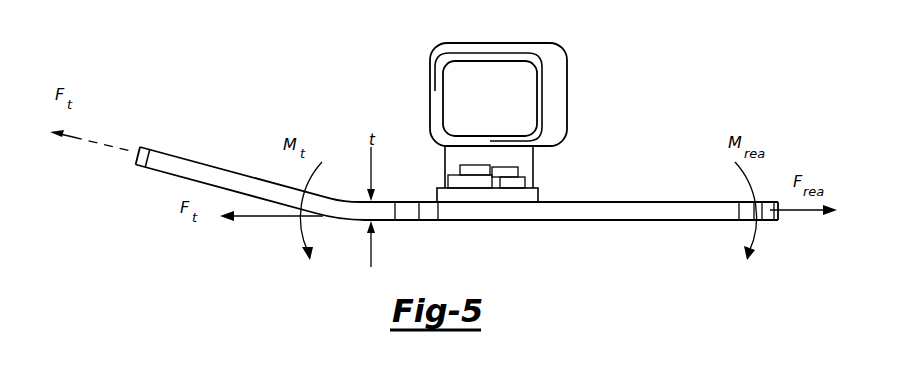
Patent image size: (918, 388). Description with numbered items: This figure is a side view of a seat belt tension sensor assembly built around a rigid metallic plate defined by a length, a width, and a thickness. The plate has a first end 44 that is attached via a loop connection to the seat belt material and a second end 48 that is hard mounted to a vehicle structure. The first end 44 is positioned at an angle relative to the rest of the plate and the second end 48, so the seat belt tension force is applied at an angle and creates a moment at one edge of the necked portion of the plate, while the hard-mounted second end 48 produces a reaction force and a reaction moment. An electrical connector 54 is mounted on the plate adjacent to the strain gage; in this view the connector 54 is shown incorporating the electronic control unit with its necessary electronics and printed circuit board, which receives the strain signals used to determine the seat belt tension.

The first end 44 is at (143, 147).
The second end 48 is at (702, 202).
The electrical connector 54 is at (567, 80).